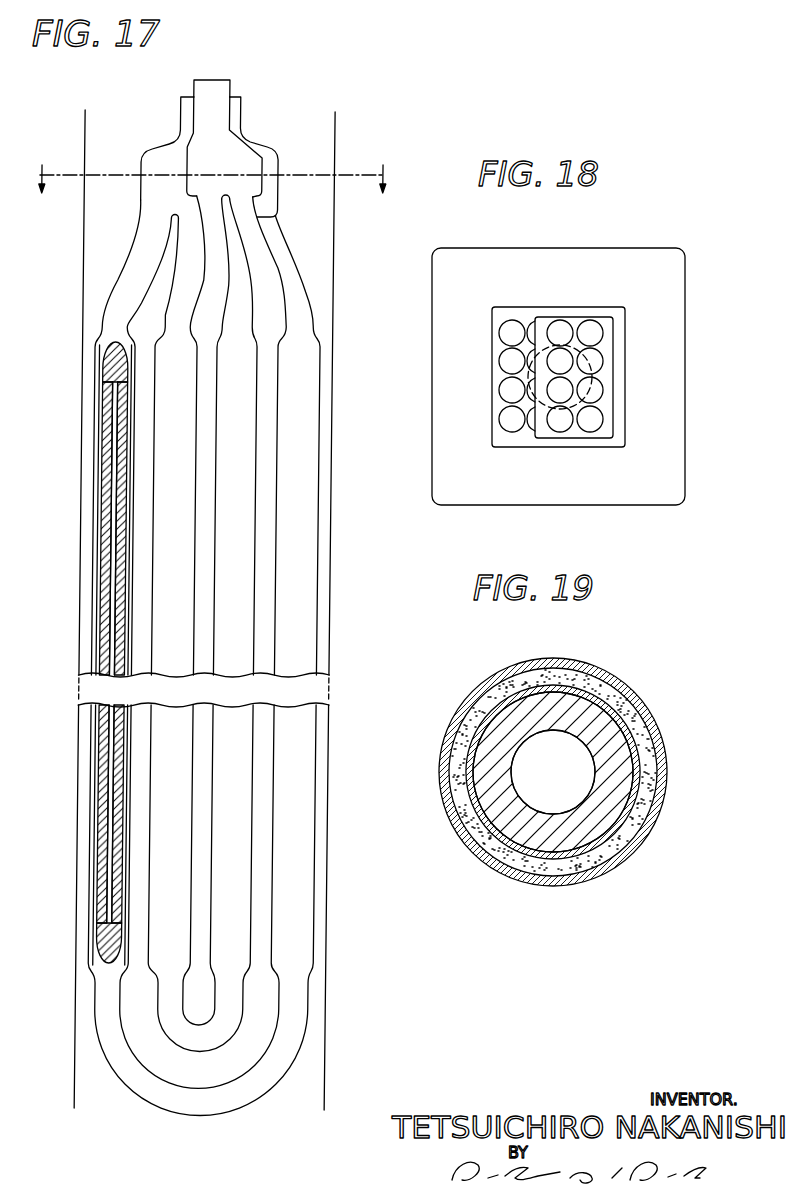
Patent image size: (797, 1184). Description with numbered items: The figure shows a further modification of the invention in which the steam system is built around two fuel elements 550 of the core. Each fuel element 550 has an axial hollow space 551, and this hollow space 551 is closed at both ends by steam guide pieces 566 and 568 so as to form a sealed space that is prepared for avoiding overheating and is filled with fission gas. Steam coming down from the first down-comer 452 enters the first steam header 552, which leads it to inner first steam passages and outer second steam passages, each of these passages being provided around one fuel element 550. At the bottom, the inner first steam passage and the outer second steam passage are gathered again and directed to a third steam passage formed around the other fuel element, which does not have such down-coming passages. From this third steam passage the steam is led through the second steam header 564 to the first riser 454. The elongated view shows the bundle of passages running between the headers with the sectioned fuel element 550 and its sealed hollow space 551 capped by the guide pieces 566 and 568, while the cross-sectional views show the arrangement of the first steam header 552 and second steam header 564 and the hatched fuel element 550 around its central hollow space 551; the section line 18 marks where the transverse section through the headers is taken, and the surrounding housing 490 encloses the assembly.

In FIG. 17, the first riser 454 is at (218, 79).
In FIG. 17, the first down-comer 452 is at (233, 121).
In FIG. 17, the second steam header 564 is at (199, 150).
In FIG. 18, the second steam header 564 is at (612, 311).
In FIG. 17, the first steam header 552 is at (154, 204).
In FIG. 18, the first steam header 552 is at (492, 342).
In FIG. 17, the steam guide piece 566 is at (106, 362).
In FIG. 17, the housing 490 is at (144, 435).
In FIG. 18, the housing 490 is at (668, 452).
In FIG. 17, the fuel element 550 is at (103, 508).
In FIG. 19, the fuel element 550 is at (507, 823).
In FIG. 17, the axial hollow space 551 is at (112, 588).
In FIG. 19, the axial hollow space 551 is at (577, 760).
In FIG. 17, the steam guide piece 568 is at (110, 950).
In FIG. 17, the section line 18- 18 is at (214, 196).